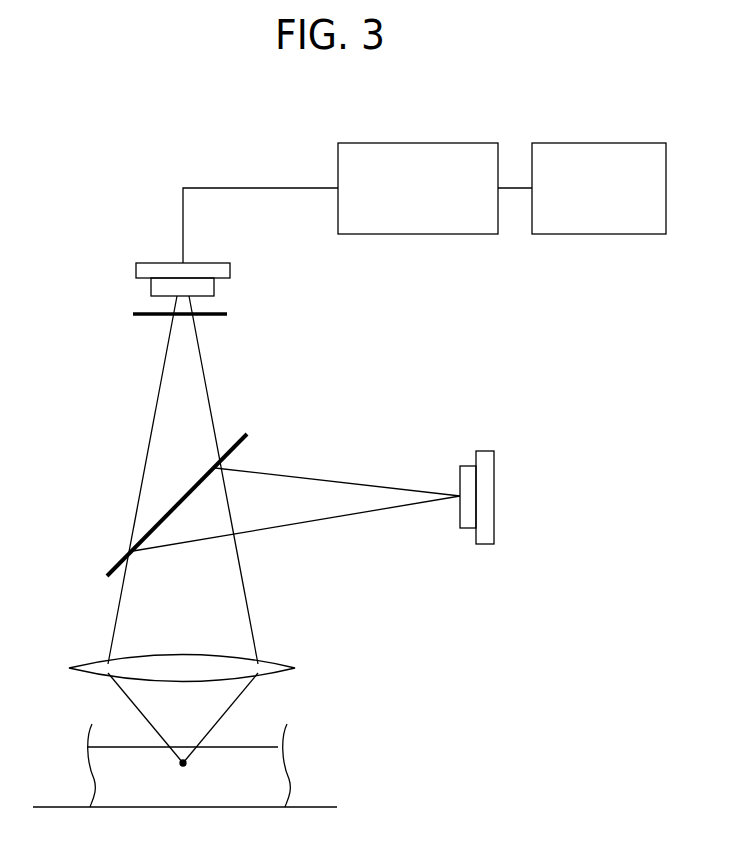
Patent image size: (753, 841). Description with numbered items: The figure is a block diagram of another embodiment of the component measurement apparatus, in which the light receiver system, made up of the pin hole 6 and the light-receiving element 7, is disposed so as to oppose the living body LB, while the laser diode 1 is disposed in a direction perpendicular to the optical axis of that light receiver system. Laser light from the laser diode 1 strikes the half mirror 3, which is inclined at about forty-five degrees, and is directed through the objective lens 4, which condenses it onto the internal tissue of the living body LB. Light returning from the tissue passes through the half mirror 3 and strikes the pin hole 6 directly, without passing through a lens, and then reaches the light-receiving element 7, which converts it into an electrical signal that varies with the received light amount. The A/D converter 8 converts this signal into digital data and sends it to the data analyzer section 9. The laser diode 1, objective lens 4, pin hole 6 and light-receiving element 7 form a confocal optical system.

The laser diode 1 is at (487, 450).
The half mirror 3 is at (247, 433).
The objective lens 4 is at (273, 662).
The pin hole 6 is at (228, 313).
The light-receiving element 7 is at (222, 268).
The A/D converter 8 is at (437, 140).
The data analyzer section 9 is at (610, 140).
The living body LB is at (277, 773).